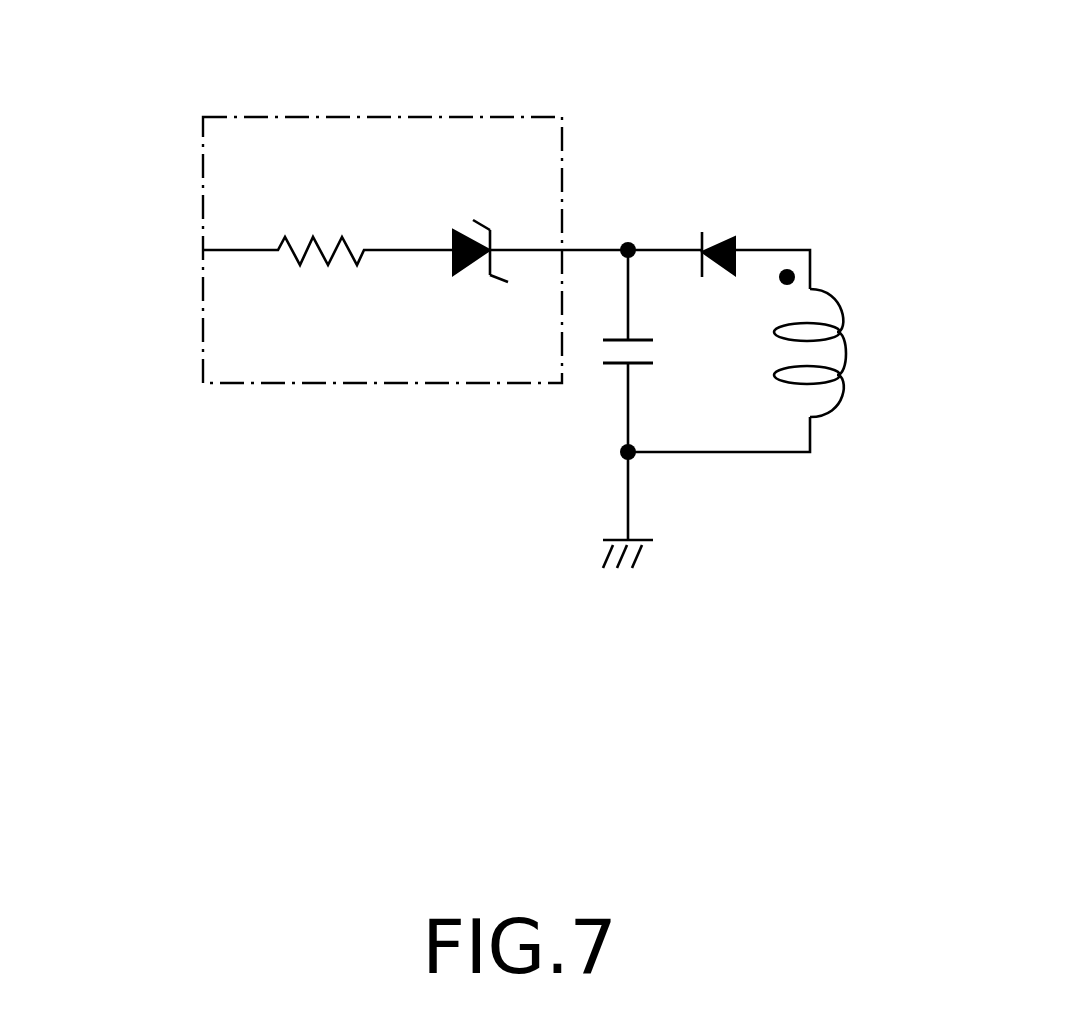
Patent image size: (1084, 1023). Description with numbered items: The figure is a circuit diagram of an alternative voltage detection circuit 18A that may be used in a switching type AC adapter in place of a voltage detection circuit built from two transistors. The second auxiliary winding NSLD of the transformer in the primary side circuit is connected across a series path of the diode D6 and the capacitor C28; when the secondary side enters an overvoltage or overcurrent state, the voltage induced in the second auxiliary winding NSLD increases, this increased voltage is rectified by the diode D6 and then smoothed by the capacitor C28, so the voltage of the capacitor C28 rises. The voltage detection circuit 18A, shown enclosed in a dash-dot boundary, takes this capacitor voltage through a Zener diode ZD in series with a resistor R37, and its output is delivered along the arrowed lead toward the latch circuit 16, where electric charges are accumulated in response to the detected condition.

The latch circuit 16 is at (203, 250).
The resistor R37 is at (321, 227).
The Zener diode ZD is at (481, 273).
The voltage detection circuit 18A is at (383, 383).
The diode D6 is at (722, 230).
The capacitor C28 is at (667, 355).
The second auxiliary winding NSLD is at (862, 343).